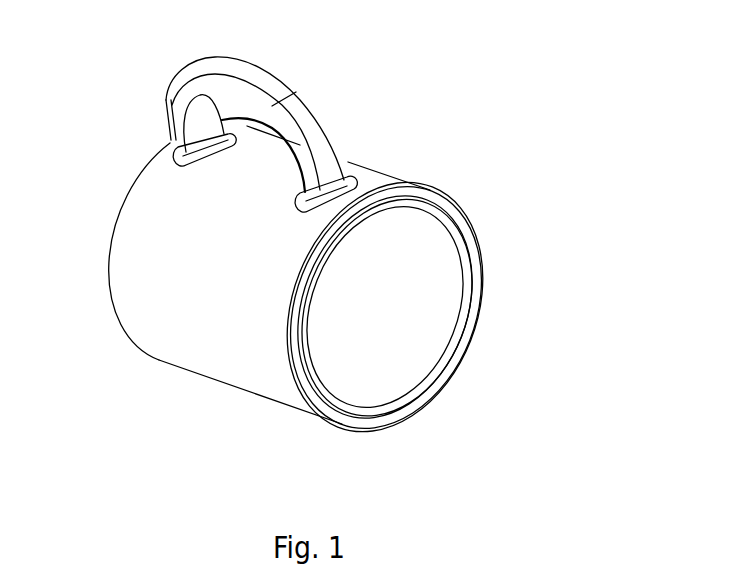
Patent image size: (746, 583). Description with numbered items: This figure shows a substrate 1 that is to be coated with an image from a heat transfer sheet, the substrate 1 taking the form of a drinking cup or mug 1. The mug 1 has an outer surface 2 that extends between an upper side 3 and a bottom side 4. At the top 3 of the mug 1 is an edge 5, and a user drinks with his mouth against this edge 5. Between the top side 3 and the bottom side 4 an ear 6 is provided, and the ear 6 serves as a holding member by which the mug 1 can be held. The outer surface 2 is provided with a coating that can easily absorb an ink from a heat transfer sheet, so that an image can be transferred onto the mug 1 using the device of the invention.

The substrate 1 is at (370, 241).
The outer surface 2 is at (200, 323).
The upper side 3 is at (497, 258).
The bottom side 4 is at (137, 142).
The edge 5 is at (470, 345).
The ear 6 is at (333, 113).